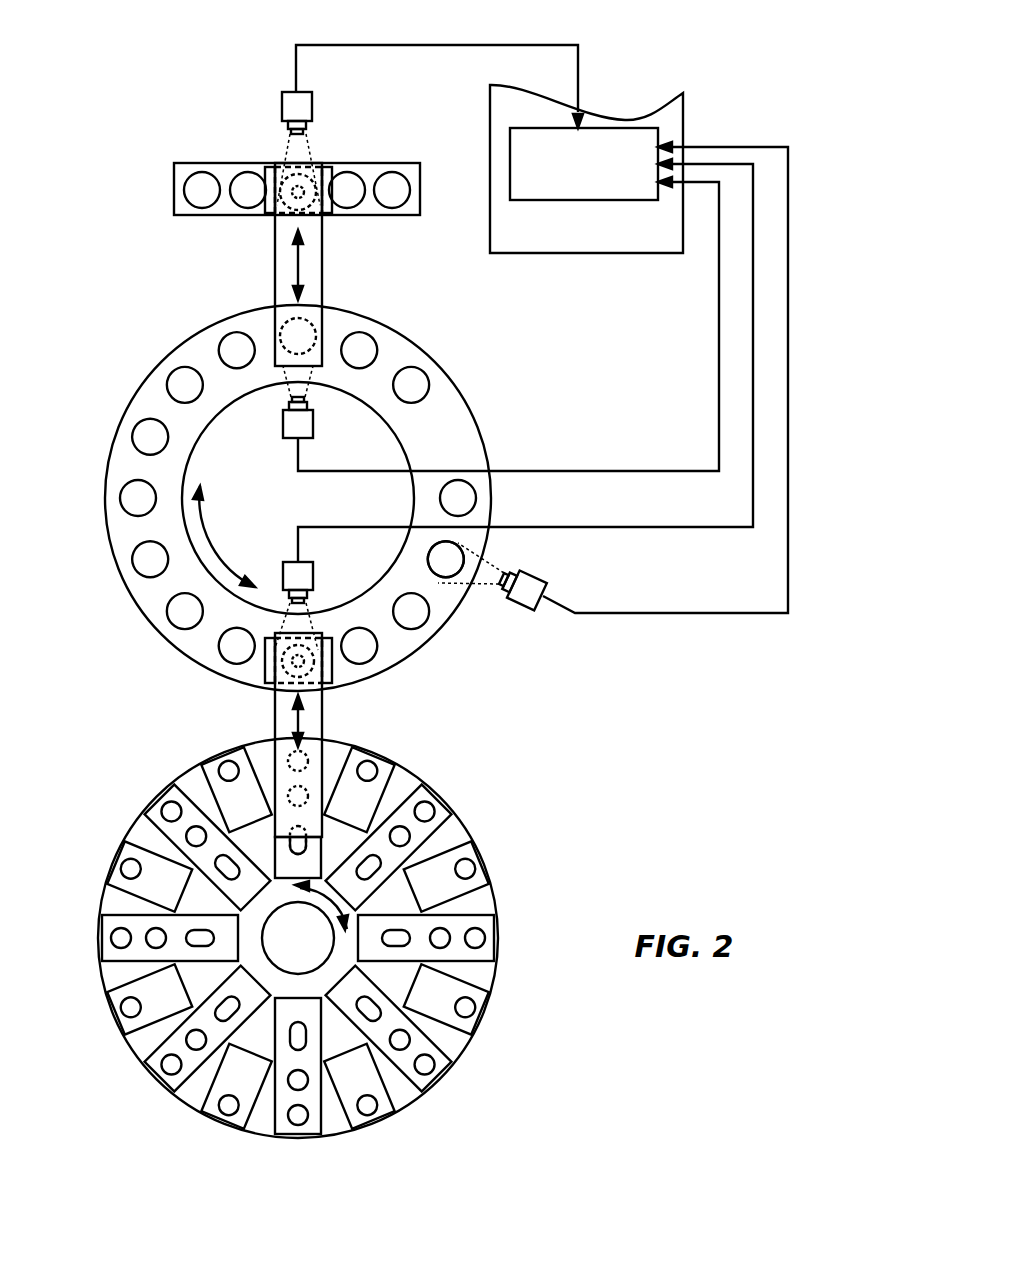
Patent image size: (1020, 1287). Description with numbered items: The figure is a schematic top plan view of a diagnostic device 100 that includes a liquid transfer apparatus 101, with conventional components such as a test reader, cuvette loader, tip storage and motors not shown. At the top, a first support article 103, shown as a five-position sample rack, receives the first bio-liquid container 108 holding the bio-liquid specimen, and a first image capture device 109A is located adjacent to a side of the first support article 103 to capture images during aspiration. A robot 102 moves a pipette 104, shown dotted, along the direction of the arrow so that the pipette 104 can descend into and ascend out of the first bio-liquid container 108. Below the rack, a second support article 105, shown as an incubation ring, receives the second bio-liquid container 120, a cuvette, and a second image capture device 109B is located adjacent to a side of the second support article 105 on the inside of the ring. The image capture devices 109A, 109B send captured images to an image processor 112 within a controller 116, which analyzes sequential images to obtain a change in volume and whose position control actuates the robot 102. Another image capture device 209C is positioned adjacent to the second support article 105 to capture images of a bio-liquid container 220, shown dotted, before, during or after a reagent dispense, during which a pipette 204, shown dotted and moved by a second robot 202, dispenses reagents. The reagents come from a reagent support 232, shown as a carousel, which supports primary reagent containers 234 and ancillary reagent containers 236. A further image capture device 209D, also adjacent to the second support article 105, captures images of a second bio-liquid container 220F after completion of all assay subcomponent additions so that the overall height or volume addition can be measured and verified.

The diagnostic device 100 is at (612, 730).
The transfer apparatus 101 is at (96, 603).
The robot 102 is at (323, 255).
The first support article 103 is at (368, 163).
The pipette 104 is at (293, 205).
The second support article 105 is at (448, 397).
The first bio-liquid container 108 is at (298, 188).
The first image capture device 109A is at (284, 91).
The second image capture device 109B is at (288, 442).
The image processor 112 is at (660, 137).
The controller 116 is at (590, 256).
The second bio-liquid container 120 is at (317, 328).
The second robot 202 is at (307, 722).
The pipette 204 is at (303, 662).
The image capture device 209C is at (308, 563).
The image capture device 209D is at (535, 612).
The bio-liquid container 220 is at (295, 678).
The second bio-liquid container 220F is at (462, 549).
The reagent support 232 is at (455, 837).
The primary reagent containers 234 is at (420, 1037).
The ancillary reagent containers 236 is at (157, 878).